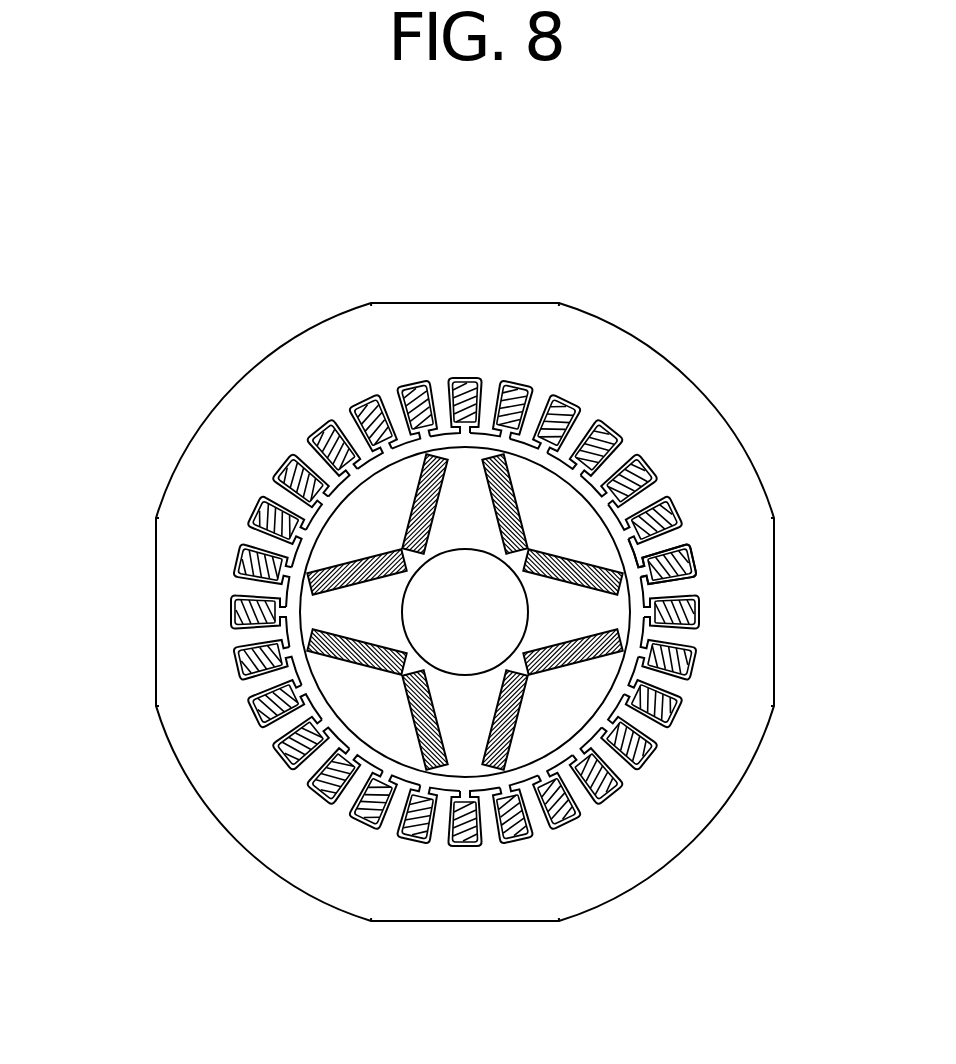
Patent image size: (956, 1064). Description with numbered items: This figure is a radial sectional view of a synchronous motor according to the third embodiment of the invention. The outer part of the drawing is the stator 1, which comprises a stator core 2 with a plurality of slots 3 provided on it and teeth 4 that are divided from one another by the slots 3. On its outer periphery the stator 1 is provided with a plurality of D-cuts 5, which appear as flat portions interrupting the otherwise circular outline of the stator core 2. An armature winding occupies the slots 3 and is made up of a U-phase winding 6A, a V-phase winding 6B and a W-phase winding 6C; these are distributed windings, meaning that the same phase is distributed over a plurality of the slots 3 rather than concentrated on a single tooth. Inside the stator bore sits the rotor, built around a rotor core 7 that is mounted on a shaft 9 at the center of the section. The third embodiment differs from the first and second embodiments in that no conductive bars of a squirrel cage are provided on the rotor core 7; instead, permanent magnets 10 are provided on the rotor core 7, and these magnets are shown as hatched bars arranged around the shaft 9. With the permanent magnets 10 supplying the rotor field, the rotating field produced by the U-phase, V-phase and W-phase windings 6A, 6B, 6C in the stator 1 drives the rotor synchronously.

The stator 1 is at (441, 591).
The stator core 2 is at (714, 448).
The slots 3 is at (700, 575).
The teeth 4 is at (688, 656).
The D-cuts 5 is at (150, 568).
The U-phase winding 6A is at (350, 403).
The V-phase winding 6B is at (240, 680).
The W-phase winding 6C is at (672, 727).
The rotor core 7 is at (480, 681).
The shaft 9 is at (465, 612).
The permanent magnets 10 is at (510, 748).